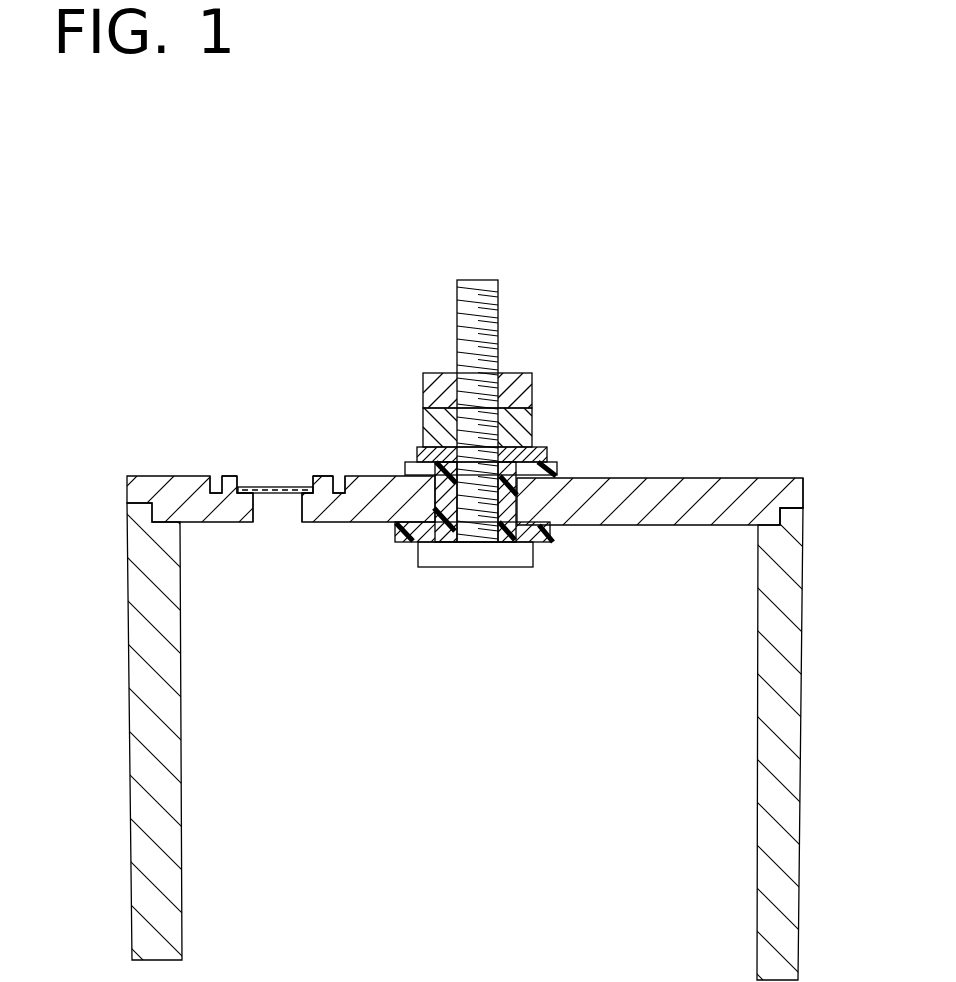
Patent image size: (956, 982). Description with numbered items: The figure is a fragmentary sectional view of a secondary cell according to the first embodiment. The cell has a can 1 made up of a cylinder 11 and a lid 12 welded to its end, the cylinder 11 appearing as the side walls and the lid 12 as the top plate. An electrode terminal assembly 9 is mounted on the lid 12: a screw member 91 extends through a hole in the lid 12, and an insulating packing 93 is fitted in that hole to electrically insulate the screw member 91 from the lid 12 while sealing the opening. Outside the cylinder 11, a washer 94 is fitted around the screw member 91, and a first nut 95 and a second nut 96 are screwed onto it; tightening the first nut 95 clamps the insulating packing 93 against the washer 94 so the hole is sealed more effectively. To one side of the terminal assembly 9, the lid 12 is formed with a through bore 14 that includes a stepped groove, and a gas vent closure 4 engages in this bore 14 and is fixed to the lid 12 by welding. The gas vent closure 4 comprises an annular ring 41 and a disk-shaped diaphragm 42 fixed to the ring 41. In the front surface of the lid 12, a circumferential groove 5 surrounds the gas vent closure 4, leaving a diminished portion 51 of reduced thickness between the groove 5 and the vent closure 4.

The can 1 is at (695, 480).
The cylinder 11 is at (785, 720).
The lid 12 is at (757, 492).
The through bore 14 is at (258, 518).
The gas vent closure 4 is at (272, 357).
The annular ring 41 is at (240, 474).
The diaphragm 42 is at (268, 474).
The circumferential groove 5 is at (215, 474).
The diminished portion 51 is at (228, 474).
The electrode terminal assembly 9 is at (553, 273).
The screw member 91 is at (483, 297).
The insulating packing 93 is at (550, 467).
The washer 94 is at (422, 457).
The first nut 95 is at (433, 427).
The second nut 96 is at (435, 387).